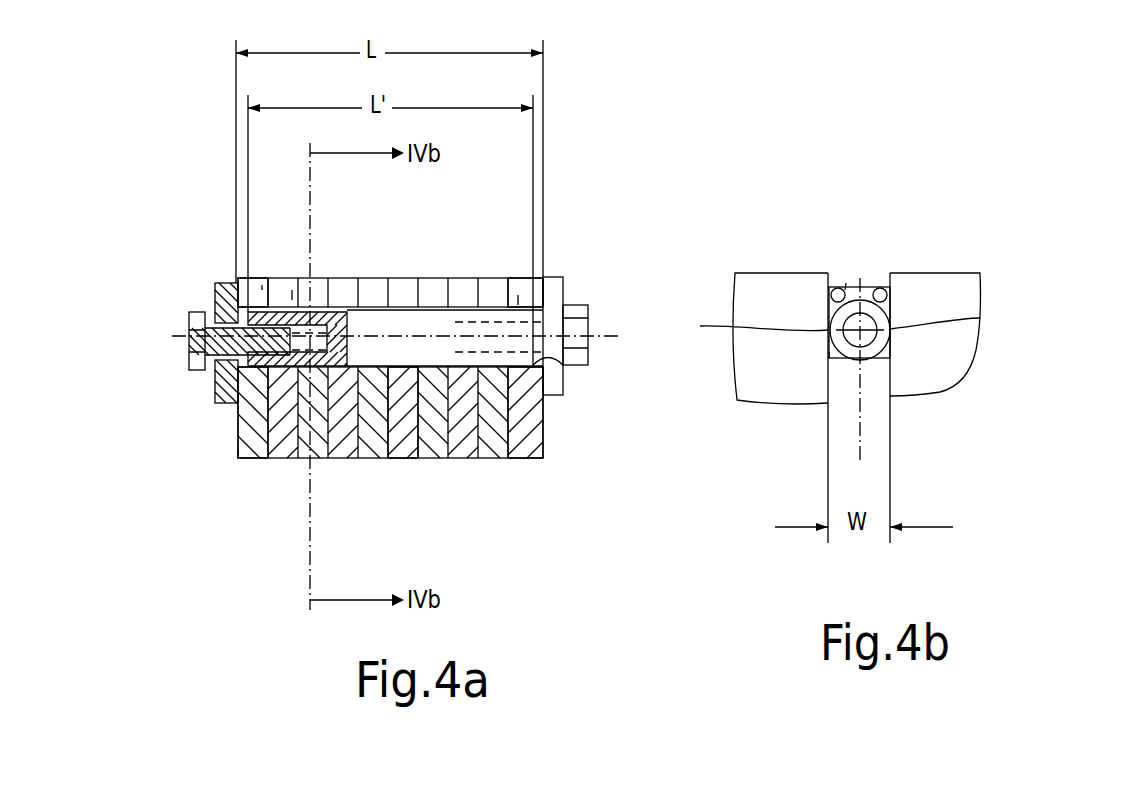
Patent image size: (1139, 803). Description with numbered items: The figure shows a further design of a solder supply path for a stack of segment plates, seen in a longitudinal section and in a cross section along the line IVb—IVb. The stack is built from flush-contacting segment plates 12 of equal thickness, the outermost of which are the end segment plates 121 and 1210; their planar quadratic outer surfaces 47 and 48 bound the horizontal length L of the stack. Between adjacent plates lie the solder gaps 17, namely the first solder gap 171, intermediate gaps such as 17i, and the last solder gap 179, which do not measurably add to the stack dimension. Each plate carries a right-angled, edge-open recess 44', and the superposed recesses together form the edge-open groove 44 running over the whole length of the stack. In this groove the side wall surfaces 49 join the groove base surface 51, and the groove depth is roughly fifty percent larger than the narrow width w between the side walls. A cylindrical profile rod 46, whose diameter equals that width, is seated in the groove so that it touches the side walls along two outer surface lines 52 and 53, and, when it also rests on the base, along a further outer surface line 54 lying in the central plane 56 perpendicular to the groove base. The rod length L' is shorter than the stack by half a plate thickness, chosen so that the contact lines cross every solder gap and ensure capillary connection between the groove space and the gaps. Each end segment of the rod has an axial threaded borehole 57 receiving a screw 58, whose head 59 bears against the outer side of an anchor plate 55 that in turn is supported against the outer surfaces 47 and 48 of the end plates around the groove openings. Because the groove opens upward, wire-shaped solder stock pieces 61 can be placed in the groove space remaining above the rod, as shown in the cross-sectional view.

In FIG. 4A, the segment plates 12 is at (390, 292).
In FIG. 4B, the segment plates 12 is at (978, 272).
In FIG. 4A, the end segment plate 121 is at (246, 463).
In FIG. 4A, the end segment plate 1210 is at (525, 442).
In FIG. 4A, the solder gaps 17 is at (390, 412).
In FIG. 4A, the solder gap 171 is at (283, 463).
In FIG. 4A, the solder gap 17i is at (400, 460).
In FIG. 4A, the solder gap 179 is at (512, 416).
In FIG. 4A, the groove 44 is at (445, 264).
In FIG. 4B, the groove 44 is at (908, 274).
In FIG. 4A, the edge recesses 44' is at (328, 279).
In FIG. 4A, the profile rod 46 is at (455, 335).
In FIG. 4B, the profile rod 46 is at (862, 285).
In FIG. 4A, the outer surface 47 is at (240, 449).
In FIG. 4A, the outer surface 48 is at (548, 428).
In FIG. 4B, the side wall surfaces 49 is at (832, 278).
In FIG. 4A, the groove base surface 51 is at (565, 355).
In FIG. 4B, the groove base surface 51 is at (837, 360).
In FIG. 4B, the outer surface line 52 is at (747, 319).
In FIG. 4B, the outer surface line 53 is at (980, 318).
In FIG. 4B, the outer surface line 54 is at (862, 360).
In FIG. 4A, the anchor plates 55 is at (226, 292).
In FIG. 4B, the central plane 56 is at (861, 420).
In FIG. 4A, the axial threaded boreholes 57 is at (292, 300).
In FIG. 4A, the screws 58 is at (262, 285).
In FIG. 4A, the heads 59 is at (197, 312).
In FIG. 4B, the wire shaped solder stock pieces 61 is at (846, 283).